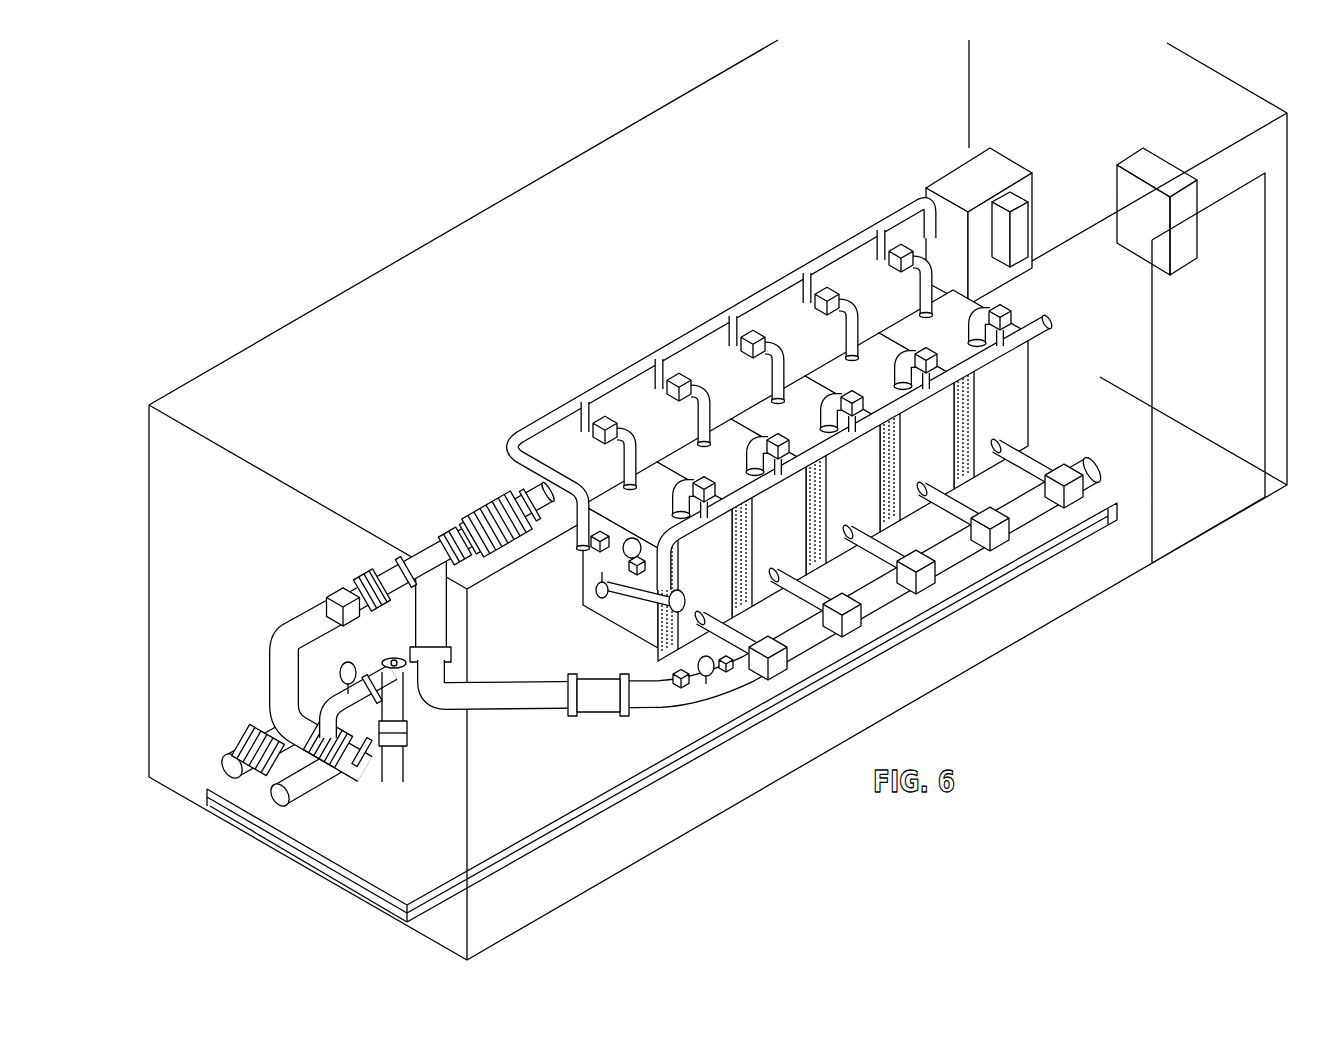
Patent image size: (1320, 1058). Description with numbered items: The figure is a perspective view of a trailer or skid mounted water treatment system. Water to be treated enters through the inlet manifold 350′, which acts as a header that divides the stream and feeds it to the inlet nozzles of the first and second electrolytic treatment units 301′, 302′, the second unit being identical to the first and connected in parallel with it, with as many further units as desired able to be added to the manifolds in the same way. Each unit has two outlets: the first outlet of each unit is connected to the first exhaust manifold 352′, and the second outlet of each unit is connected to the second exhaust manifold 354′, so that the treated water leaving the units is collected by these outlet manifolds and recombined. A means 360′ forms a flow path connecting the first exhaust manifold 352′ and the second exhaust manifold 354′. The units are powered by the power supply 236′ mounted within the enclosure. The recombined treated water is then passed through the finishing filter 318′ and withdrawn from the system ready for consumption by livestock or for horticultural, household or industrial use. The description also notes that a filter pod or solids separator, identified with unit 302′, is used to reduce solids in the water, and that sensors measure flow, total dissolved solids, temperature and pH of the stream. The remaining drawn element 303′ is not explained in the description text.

The control box 236′ is at (997, 172).
The upper manifold pipe 354′ is at (692, 344).
The middle manifold pipe 352′ is at (987, 358).
The heat exchanger unit 302′ is at (807, 540).
The heat exchanger unit 301′ is at (731, 583).
The inlet pipe 318′ is at (435, 625).
The valve 360′ is at (603, 560).
The lower manifold pipe 350′ is at (893, 605).
The drain pipe 303′ is at (400, 712).